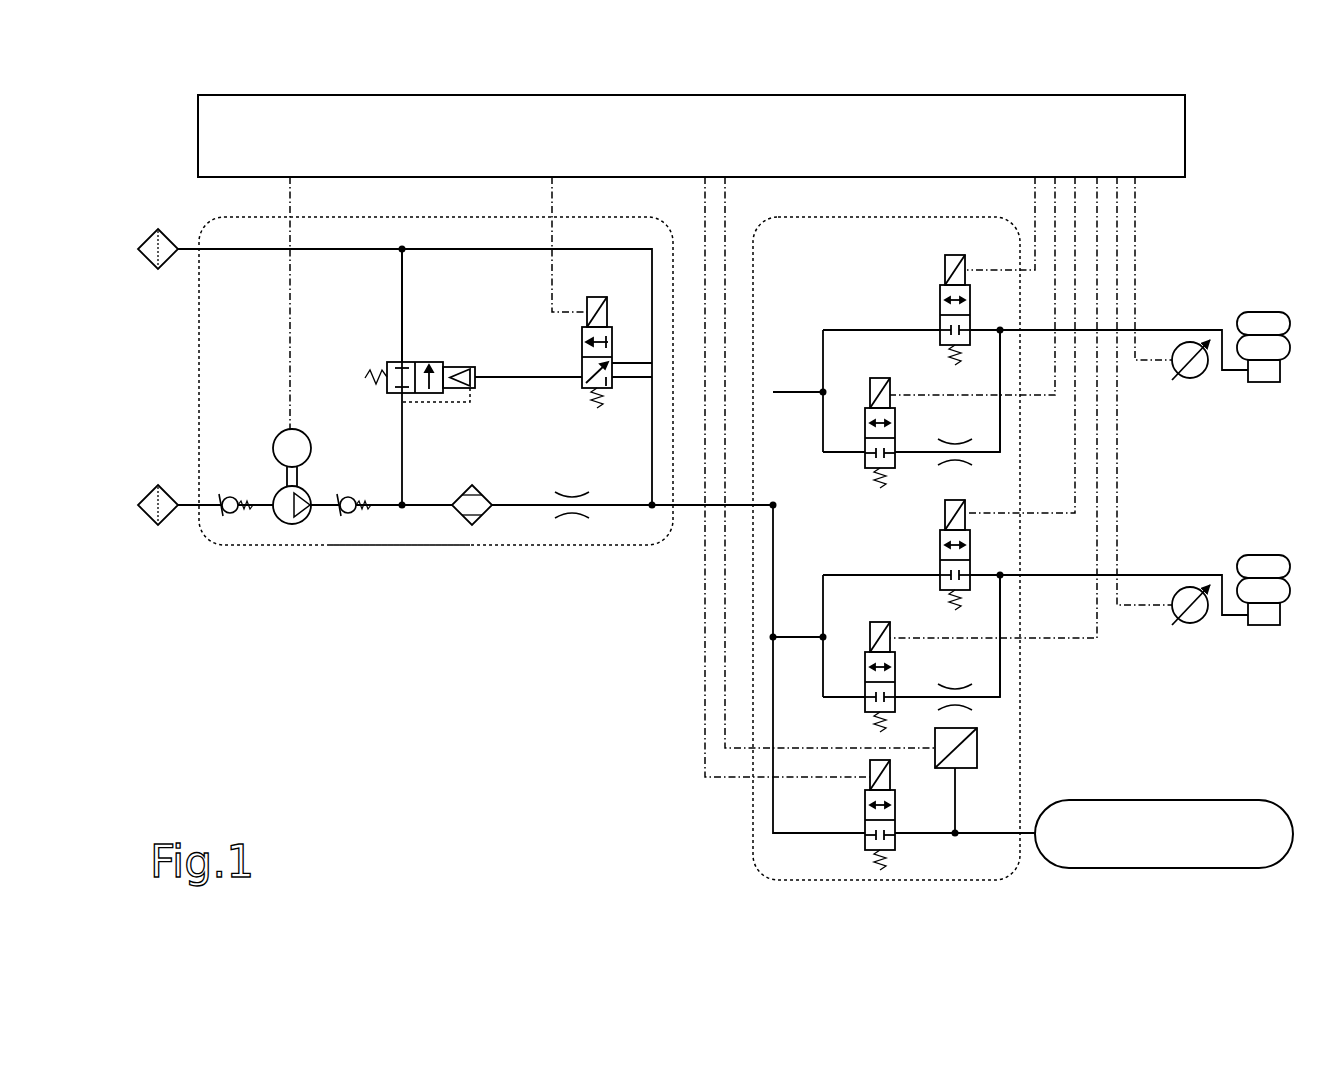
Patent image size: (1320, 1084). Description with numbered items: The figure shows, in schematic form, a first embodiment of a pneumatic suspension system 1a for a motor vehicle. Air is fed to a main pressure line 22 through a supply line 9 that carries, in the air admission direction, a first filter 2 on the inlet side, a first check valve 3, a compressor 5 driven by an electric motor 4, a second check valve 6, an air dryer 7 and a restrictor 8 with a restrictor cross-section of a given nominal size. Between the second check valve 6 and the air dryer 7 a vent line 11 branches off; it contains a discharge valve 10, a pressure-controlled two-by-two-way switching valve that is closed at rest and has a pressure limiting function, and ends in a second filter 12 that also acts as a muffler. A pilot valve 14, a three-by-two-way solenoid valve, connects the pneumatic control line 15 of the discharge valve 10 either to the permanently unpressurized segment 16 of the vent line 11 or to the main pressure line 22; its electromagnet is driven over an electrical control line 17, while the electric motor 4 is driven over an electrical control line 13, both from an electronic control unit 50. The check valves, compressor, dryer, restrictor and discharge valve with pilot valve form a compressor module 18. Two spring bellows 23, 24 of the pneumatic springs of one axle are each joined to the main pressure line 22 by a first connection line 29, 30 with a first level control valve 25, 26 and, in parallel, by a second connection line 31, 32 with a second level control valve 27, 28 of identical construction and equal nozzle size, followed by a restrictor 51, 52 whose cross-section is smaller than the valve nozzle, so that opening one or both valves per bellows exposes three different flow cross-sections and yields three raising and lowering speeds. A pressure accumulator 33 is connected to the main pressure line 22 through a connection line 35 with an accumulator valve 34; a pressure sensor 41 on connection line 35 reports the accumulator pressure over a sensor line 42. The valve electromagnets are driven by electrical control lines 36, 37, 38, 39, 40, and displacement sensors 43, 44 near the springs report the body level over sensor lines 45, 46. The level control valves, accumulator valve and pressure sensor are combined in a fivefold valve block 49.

The pneumatic suspension system 1a is at (263, 731).
The first filter 2 is at (160, 527).
The first check valve 3 is at (232, 515).
The electric motor 4 is at (273, 448).
The compressor 5 is at (292, 524).
The second check valve 6 is at (350, 515).
The air dryer 7 is at (485, 525).
The restrictor 8 is at (572, 527).
The supply line 9 is at (427, 507).
The discharge valve 10 is at (385, 360).
The vent line 11 is at (402, 449).
The second filter 12 is at (160, 272).
The electrical control line 13 is at (290, 187).
The pilot valve 14 is at (578, 348).
The pneumatic control line 15 is at (527, 379).
The permanently unpressurized segment 16 is at (243, 258).
The electrical control line 17 is at (552, 198).
The compressor module 18 is at (400, 547).
The main pressure line 22 is at (690, 512).
The spring bellows 23 is at (1262, 320).
The spring bellows 24 is at (1262, 565).
The first level control valve 25 is at (922, 308).
The first level control valve 26 is at (922, 553).
The second level control valve 27 is at (852, 400).
The second level control valve 28 is at (852, 645).
The first connection line 29 is at (840, 330).
The first connection line 30 is at (840, 575).
The second connection line 31 is at (1003, 420).
The second connection line 32 is at (1003, 665).
The pressure accumulator 33 is at (1145, 850).
The accumulator valve 34 is at (852, 812).
The connection line 35 is at (990, 833).
The electrical control line 36 is at (1035, 198).
The electrical control line 37 is at (1077, 455).
The electrical control line 38 is at (1058, 375).
The electrical control line 39 is at (1097, 620).
The electrical control line 40 is at (705, 750).
The pressure sensor 41 is at (977, 748).
The sensor line 42 is at (725, 703).
The displacement sensor 43 is at (1190, 342).
The displacement sensor 44 is at (1190, 587).
The sensor line 45 is at (1135, 185).
The sensor line 46 is at (1117, 207).
The fivefold valve block 49 is at (755, 827).
The electronic control unit 50 is at (675, 152).
The restrictor 51 is at (984, 480).
The restrictor 52 is at (989, 705).